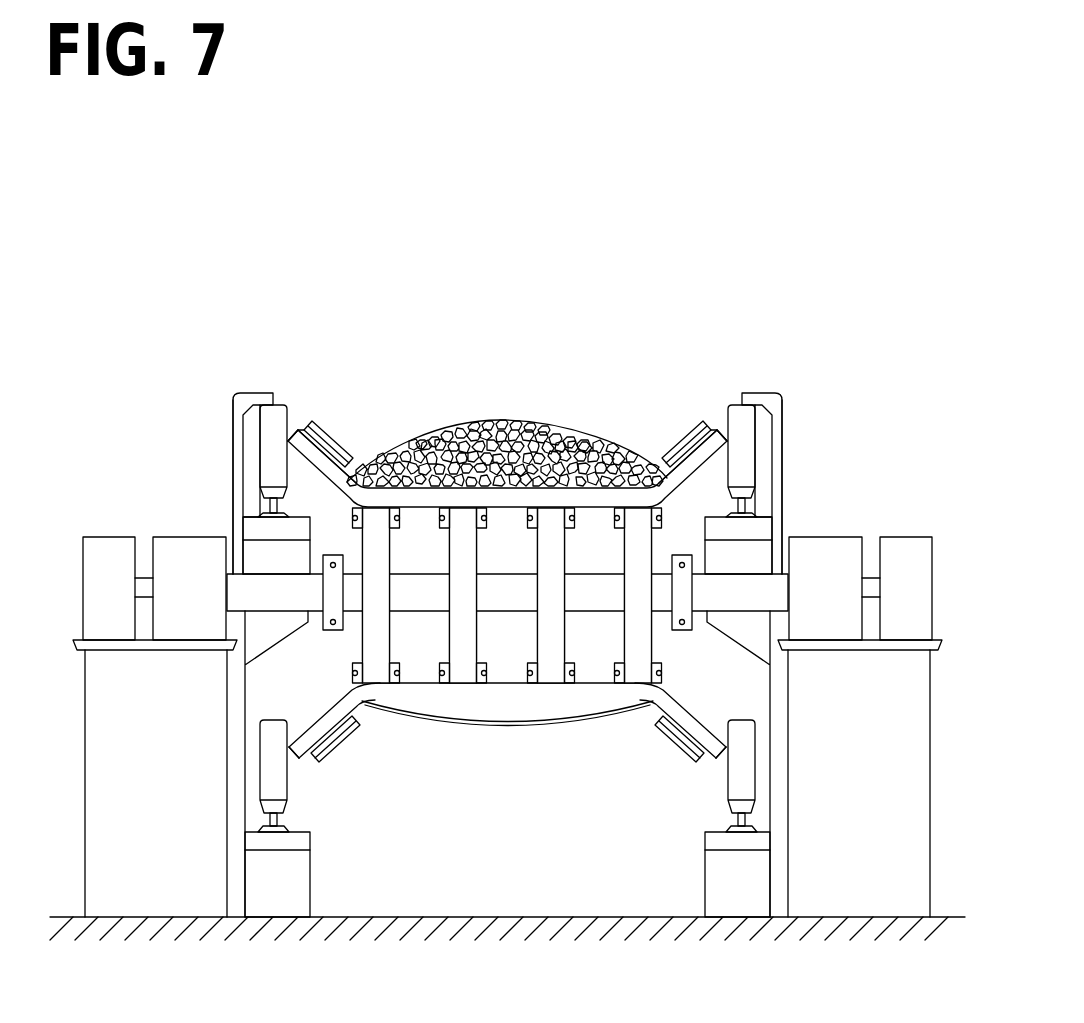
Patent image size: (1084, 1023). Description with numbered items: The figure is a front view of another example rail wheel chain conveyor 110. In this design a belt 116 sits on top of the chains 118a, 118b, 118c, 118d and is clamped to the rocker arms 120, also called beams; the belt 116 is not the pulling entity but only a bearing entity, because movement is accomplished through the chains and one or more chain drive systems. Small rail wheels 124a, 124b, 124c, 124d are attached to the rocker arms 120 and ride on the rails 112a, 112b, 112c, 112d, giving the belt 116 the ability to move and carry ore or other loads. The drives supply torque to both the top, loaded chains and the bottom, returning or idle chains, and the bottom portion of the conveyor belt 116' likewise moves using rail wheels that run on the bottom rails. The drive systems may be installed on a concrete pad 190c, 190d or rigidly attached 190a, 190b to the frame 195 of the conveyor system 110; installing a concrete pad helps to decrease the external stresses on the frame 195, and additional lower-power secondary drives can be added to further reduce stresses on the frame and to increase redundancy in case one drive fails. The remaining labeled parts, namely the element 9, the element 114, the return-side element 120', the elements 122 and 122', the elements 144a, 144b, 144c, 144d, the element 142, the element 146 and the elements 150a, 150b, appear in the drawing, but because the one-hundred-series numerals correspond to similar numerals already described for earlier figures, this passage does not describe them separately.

The bulk material 9 is at (530, 421).
The rail wheel chain conveyor 110 is at (705, 215).
The conveyor assembly 114 is at (514, 317).
The belt 116 is at (507, 446).
The bottom portion of the conveyor belt 116' is at (507, 745).
The rocker arm 120 is at (504, 406).
The conveyor belt return side 120' is at (507, 730).
The idler roller 122 is at (507, 412).
The return idler roller 122' is at (507, 754).
The rail wheel 124a is at (288, 437).
The rail wheel 124b is at (728, 410).
The rail wheel 124c is at (262, 718).
The rail wheel 124d is at (752, 768).
The rail 112a is at (260, 488).
The rail 112b is at (755, 495).
The rail 112c is at (260, 811).
The rail 112d is at (755, 805).
The chain 118a is at (357, 524).
The chain 118b is at (444, 524).
The chain 118c is at (537, 527).
The chain 118d is at (626, 527).
The support post 144a is at (358, 567).
The support post 144b is at (443, 567).
The support post 144c is at (535, 567).
The support post 144d is at (655, 617).
The cross beam with mounting plate 142 is at (747, 572).
The counterweight 146 is at (110, 537).
The support tower 150a is at (253, 392).
The support tower 150b is at (757, 395).
The rigid attachment 190a is at (243, 552).
The rigid attachment 190b is at (765, 517).
The concrete pad 190c is at (312, 887).
The concrete pad 190d is at (770, 888).
The frame 195 is at (222, 866).